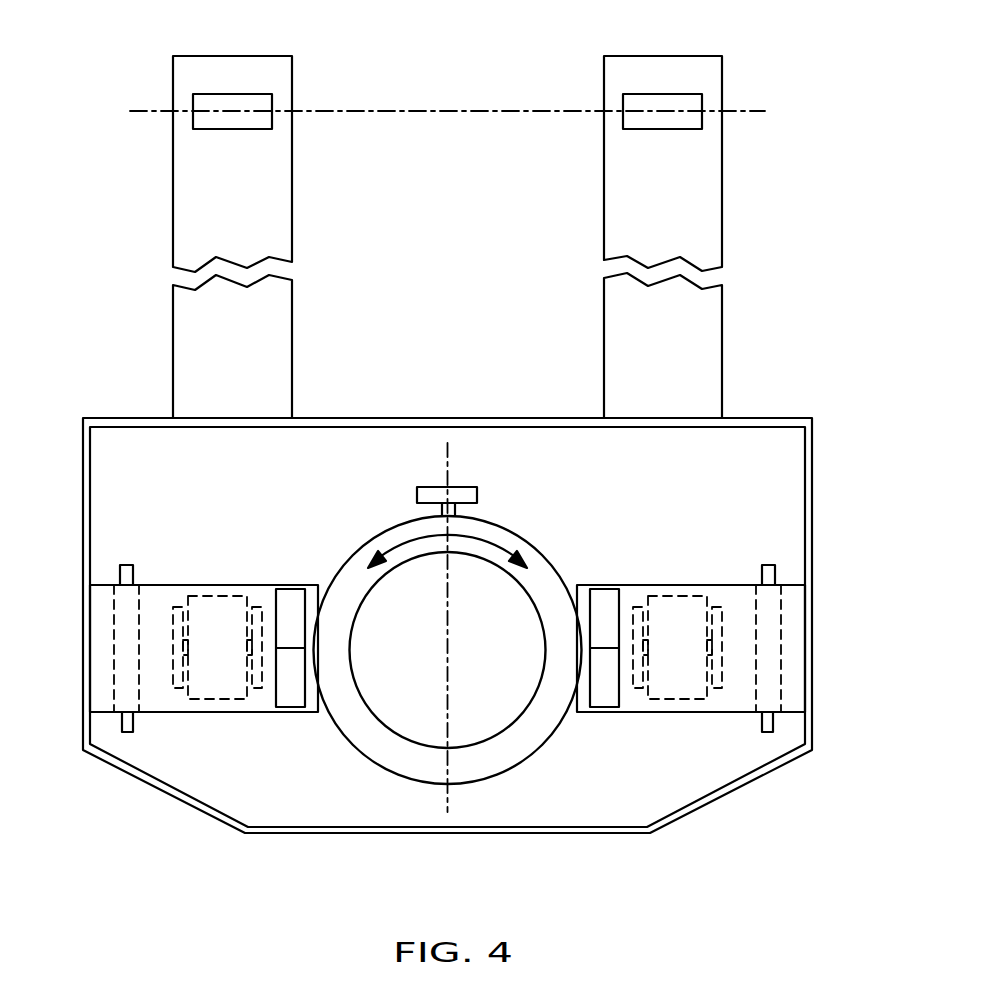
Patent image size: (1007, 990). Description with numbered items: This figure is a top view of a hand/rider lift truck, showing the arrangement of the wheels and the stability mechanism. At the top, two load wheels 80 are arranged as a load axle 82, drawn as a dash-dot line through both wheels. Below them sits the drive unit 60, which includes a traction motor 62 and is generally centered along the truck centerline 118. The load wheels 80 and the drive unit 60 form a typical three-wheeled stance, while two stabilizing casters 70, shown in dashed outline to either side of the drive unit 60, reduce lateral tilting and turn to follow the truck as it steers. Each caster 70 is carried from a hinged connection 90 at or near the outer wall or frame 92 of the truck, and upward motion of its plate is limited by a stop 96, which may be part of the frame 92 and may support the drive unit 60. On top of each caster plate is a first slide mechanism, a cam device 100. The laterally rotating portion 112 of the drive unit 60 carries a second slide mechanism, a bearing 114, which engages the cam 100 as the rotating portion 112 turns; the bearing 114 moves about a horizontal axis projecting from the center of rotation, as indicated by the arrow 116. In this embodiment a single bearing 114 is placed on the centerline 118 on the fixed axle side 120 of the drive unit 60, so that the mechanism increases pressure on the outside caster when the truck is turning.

The drive unit 60 is at (578, 550).
The traction motor 62 is at (513, 662).
The stabilizing casters 70 is at (447, 681).
The load wheels 80 is at (278, 138).
The load axle 82 is at (450, 110).
The hinged connection 90 is at (122, 722).
The frame 92 is at (83, 550).
The stop 96 is at (157, 697).
The cam device 100 is at (285, 697).
The laterally rotating portion 112 is at (492, 760).
The bearing 114 is at (481, 486).
The arrow 116 is at (483, 537).
The centerline 118 is at (446, 466).
The fixed axle side 120 is at (441, 509).